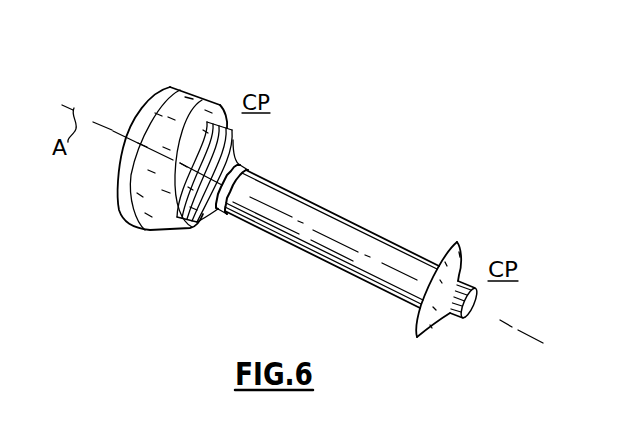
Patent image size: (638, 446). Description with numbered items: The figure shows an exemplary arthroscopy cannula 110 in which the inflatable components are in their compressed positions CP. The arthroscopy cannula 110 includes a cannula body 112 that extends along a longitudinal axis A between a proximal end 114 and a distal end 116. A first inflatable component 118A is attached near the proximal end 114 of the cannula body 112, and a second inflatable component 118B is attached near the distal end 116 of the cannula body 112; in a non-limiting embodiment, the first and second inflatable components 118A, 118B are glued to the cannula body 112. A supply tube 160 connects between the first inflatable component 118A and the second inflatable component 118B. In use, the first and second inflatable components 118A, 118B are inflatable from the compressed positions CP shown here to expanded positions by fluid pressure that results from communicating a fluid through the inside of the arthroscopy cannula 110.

The arthroscopy cannula 110 is at (338, 123).
The cannula body 112 is at (306, 245).
The proximal end 114 is at (213, 78).
The distal end 116 is at (474, 246).
The first inflatable component 118A is at (189, 222).
The second inflatable component 118B is at (419, 340).
The supply tube 160 is at (336, 217).